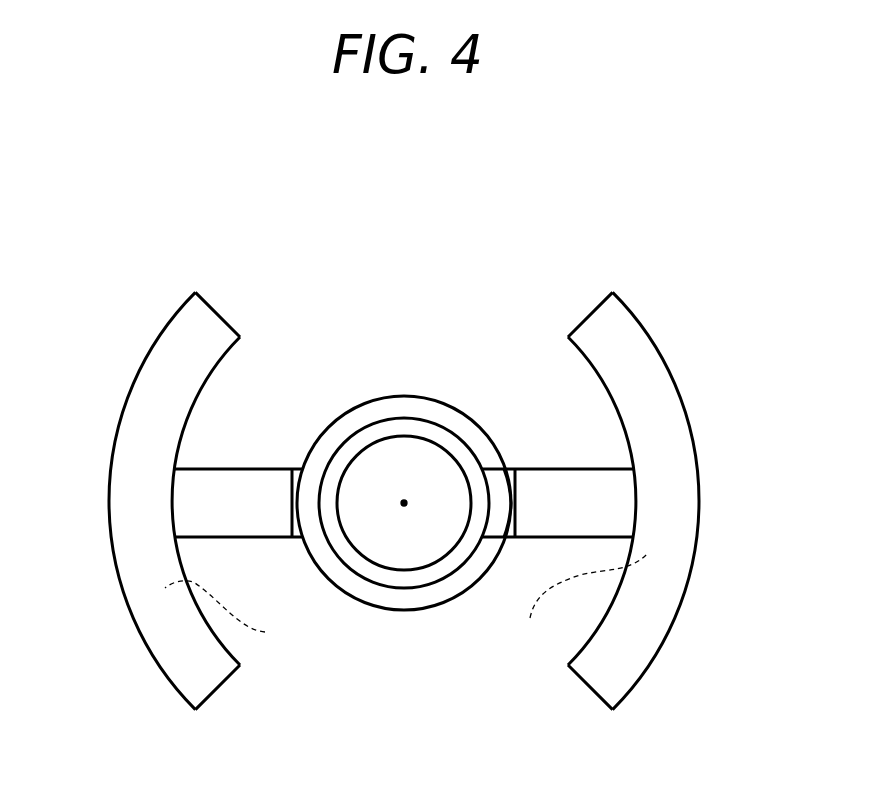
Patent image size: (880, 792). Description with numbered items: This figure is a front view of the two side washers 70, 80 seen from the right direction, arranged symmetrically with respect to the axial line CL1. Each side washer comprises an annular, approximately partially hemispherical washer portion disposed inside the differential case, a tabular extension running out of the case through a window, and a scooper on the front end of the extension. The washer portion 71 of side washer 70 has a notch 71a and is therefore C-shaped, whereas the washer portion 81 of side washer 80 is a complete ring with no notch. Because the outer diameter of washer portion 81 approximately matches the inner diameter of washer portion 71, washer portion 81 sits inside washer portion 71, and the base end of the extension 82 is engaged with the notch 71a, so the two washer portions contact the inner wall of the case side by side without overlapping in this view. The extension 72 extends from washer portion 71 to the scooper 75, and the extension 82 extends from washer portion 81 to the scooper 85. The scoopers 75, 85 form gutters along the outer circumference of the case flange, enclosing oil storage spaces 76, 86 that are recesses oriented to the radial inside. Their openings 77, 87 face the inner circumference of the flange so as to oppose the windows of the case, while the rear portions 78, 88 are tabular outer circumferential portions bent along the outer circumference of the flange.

The side washer 70 is at (159, 465).
The scooper 75 is at (147, 405).
The opening 77 is at (213, 370).
The rear portion 78 is at (109, 475).
The oil storage space 76 is at (230, 617).
The extension 72 is at (277, 477).
The washer portion 71 is at (377, 415).
The notch 71a is at (494, 471).
The washer portion 81 is at (433, 440).
The extension 82 is at (516, 468).
The side washer 80 is at (657, 465).
The scooper 85 is at (650, 427).
The opening 87 is at (588, 365).
The rear portion 88 is at (699, 514).
The oil storage space 86 is at (581, 601).
The axial line CL1 is at (406, 497).